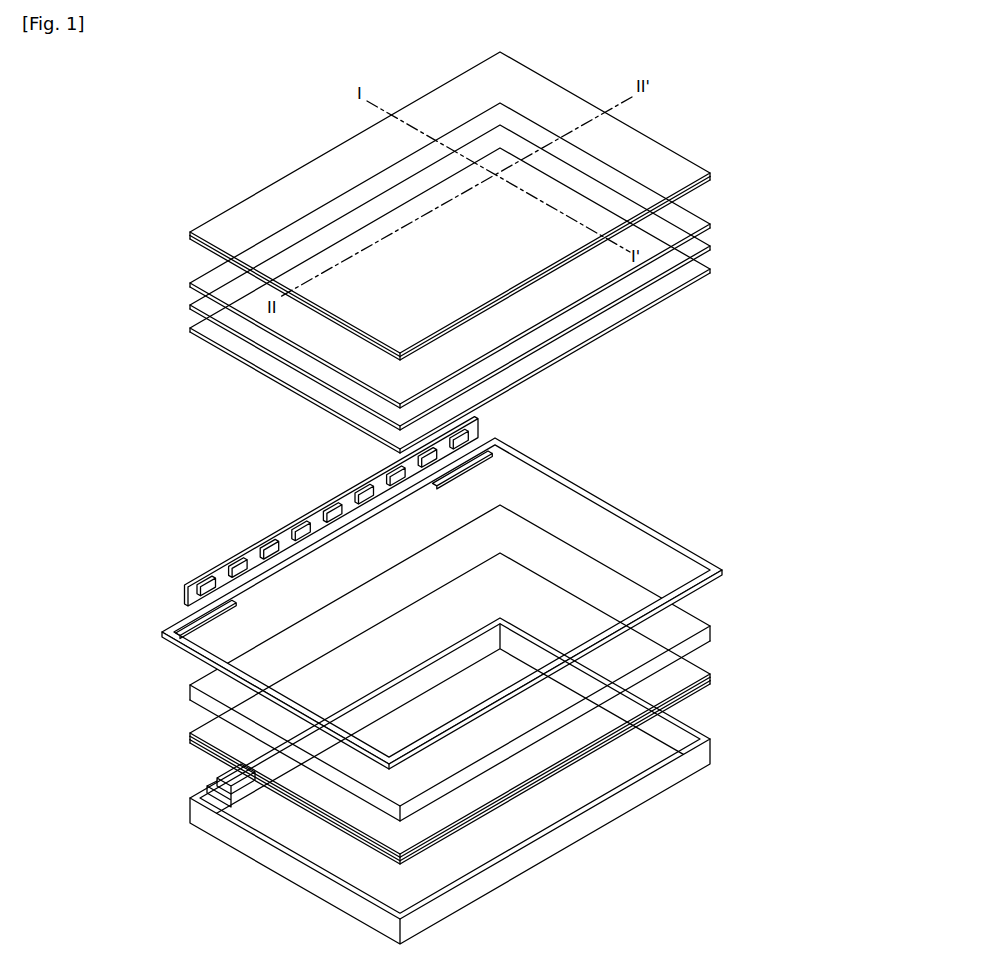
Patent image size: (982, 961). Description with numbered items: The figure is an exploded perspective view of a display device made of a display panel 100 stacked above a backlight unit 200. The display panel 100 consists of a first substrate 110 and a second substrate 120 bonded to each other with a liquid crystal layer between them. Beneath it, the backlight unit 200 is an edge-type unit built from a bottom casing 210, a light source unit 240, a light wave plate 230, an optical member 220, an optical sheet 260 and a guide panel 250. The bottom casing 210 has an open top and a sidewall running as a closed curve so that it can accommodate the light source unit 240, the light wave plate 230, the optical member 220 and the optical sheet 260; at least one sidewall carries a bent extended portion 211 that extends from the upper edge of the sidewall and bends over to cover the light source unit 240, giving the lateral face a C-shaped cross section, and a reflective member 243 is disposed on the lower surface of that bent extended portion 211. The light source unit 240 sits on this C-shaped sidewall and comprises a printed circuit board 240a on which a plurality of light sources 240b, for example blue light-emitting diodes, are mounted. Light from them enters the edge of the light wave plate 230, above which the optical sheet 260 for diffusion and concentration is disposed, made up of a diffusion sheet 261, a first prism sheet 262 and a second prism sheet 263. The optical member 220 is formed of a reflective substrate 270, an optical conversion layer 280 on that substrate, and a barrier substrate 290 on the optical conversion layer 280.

The display panel 100 is at (498, 206).
The first substrate 110 is at (702, 180).
The second substrate 120 is at (702, 168).
The backlight unit 200 is at (795, 238).
The bottom casing 210 is at (430, 781).
The bent extended portion 211 is at (202, 808).
The optical member 220 is at (497, 708).
The light wave plate 230 is at (707, 630).
The light source unit 240 is at (328, 511).
The printed circuit board 240a is at (222, 576).
The light source 240b is at (272, 556).
The reflective member 243 is at (232, 792).
The guide panel 250 is at (618, 508).
The optical sheet 260 is at (434, 278).
The diffusion sheet 261 is at (450, 300).
The first prism sheet 262 is at (262, 336).
The second prism sheet 263 is at (228, 292).
The reflective substrate 270 is at (478, 772).
The optical conversion layer 280 is at (712, 680).
The barrier substrate 290 is at (703, 672).